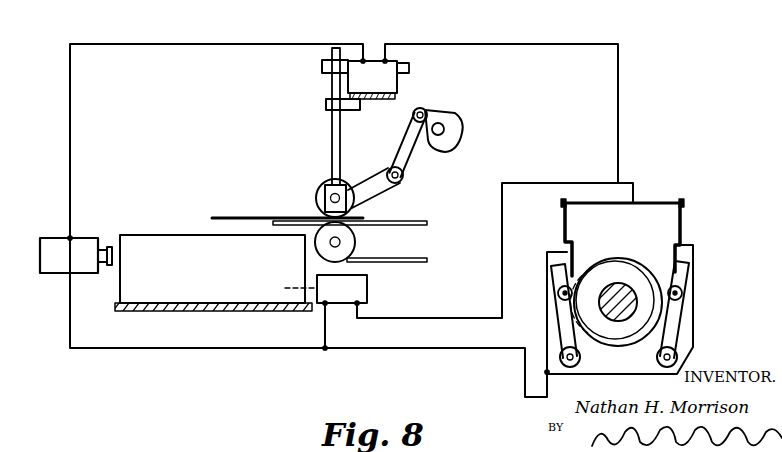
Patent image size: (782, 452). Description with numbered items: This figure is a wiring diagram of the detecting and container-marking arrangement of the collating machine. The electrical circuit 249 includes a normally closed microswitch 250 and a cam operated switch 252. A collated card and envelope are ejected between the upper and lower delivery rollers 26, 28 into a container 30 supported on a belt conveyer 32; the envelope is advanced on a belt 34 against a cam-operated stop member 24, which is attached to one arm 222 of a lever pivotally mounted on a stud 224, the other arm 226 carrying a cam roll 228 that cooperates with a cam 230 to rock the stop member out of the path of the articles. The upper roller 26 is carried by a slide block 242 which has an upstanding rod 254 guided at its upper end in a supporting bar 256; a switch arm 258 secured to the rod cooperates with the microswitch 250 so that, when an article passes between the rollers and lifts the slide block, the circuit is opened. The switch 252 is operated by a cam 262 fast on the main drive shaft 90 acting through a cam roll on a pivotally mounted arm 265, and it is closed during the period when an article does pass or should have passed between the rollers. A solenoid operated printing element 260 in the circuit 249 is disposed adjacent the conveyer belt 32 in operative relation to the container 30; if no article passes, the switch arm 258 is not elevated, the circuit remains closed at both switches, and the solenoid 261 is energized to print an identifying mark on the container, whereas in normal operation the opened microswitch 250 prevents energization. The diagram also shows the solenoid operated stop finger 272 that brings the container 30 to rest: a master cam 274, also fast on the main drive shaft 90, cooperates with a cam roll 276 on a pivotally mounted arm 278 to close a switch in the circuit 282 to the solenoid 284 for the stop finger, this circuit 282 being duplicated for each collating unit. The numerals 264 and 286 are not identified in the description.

The electrical circuit 249 is at (157, 43).
The microswitch 250 is at (373, 60).
The supporting bar 256 is at (322, 67).
The switch arm 258 is at (326, 104).
The upstanding rod 254 is at (332, 128).
The slide block 242 is at (326, 190).
The upper delivery roller 26 is at (316, 197).
The lower delivery roller 28 is at (322, 241).
The stop member 24 is at (352, 208).
The belt 34 is at (427, 221).
The lever arm 222 is at (371, 185).
The lever arm 226 is at (412, 150).
The stud 224 is at (404, 180).
The cam roll 228 is at (422, 108).
The cam 230 is at (461, 130).
The solenoid 261 is at (78, 240).
The solenoid operated printing element 260 is at (106, 250).
The container 30 is at (190, 233).
The belt conveyer 32 is at (170, 312).
The stop finger 272 is at (285, 288).
The solenoid 284 is at (367, 288).
The circuit 282 is at (502, 247).
The left pivot pin 264 is at (558, 292).
The pivotally mounted arm 265 is at (560, 326).
The cam operated switch 252 is at (578, 243).
The cam 262 is at (585, 268).
The main drive shaft 90 is at (620, 322).
The master cam 274 is at (680, 225).
The slot 286 is at (702, 248).
The cam roll 276 is at (683, 294).
The pivotally mounted arm 278 is at (677, 324).